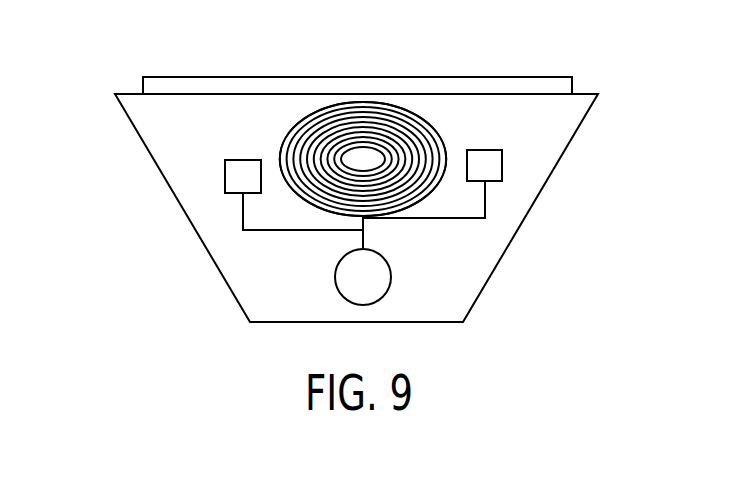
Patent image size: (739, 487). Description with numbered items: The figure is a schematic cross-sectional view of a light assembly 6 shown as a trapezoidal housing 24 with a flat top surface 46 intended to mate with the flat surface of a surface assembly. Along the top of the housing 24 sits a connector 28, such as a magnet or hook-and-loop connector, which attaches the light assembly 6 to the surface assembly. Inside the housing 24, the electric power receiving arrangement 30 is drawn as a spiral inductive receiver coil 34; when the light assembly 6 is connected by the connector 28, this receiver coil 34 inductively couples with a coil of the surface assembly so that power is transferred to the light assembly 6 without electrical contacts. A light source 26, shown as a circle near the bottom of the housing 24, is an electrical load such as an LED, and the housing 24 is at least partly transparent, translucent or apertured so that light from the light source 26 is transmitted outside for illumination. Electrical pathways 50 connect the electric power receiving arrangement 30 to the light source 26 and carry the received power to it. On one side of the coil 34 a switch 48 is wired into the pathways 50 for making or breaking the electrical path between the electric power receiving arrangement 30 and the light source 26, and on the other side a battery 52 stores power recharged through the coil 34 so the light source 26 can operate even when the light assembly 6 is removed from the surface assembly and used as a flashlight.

The light assembly 6 is at (70, 128).
The housing 24 is at (531, 207).
The light source 26 is at (383, 280).
The connector 28 is at (516, 86).
The electric power receiving arrangement 30 is at (437, 152).
The inductive receiver coil 34 is at (363, 159).
The top surface 46 is at (126, 88).
The switch 48 is at (236, 170).
The electrical pathways 50 is at (367, 220).
The battery 52 is at (478, 171).